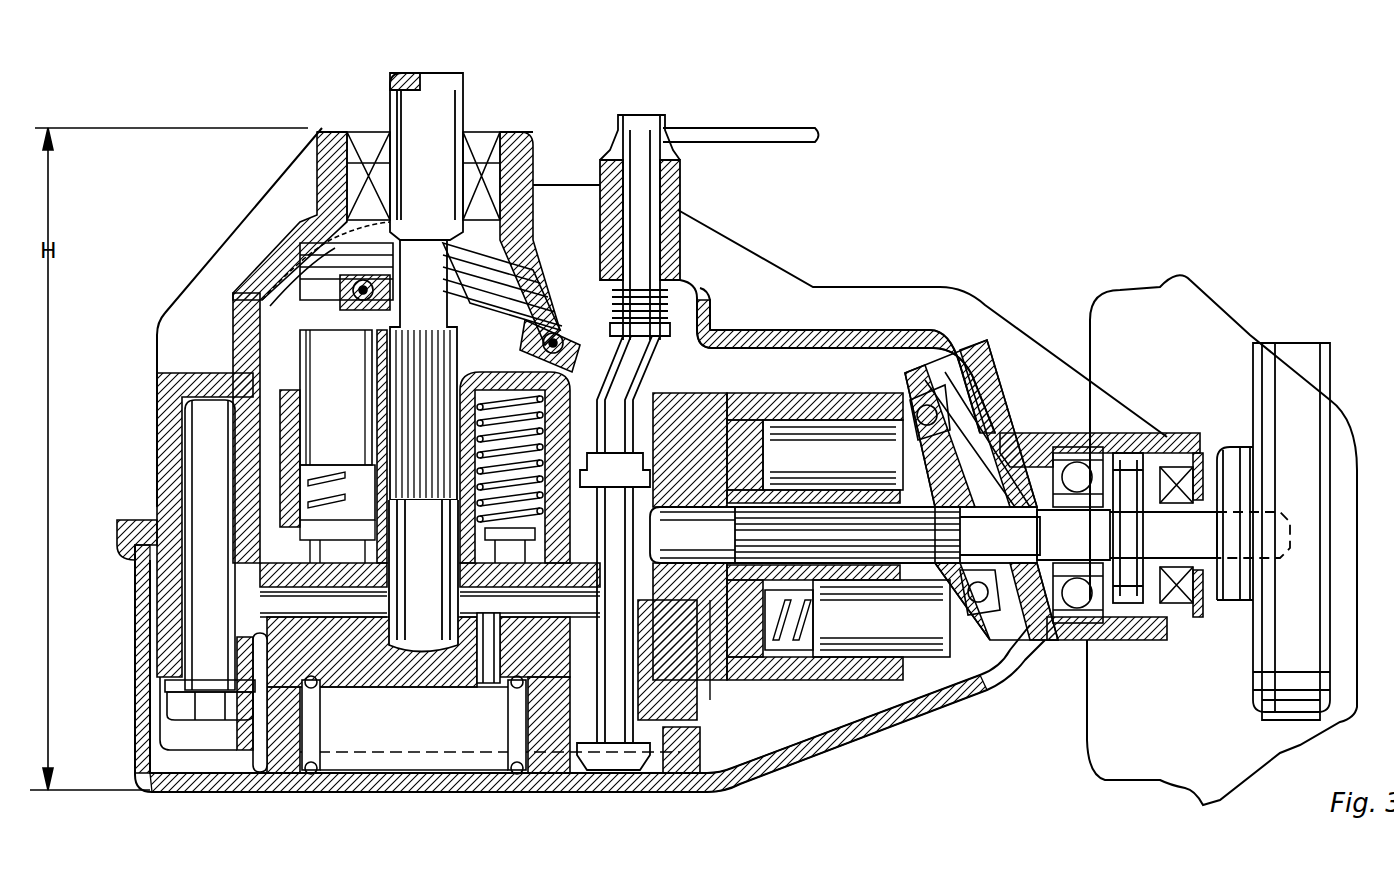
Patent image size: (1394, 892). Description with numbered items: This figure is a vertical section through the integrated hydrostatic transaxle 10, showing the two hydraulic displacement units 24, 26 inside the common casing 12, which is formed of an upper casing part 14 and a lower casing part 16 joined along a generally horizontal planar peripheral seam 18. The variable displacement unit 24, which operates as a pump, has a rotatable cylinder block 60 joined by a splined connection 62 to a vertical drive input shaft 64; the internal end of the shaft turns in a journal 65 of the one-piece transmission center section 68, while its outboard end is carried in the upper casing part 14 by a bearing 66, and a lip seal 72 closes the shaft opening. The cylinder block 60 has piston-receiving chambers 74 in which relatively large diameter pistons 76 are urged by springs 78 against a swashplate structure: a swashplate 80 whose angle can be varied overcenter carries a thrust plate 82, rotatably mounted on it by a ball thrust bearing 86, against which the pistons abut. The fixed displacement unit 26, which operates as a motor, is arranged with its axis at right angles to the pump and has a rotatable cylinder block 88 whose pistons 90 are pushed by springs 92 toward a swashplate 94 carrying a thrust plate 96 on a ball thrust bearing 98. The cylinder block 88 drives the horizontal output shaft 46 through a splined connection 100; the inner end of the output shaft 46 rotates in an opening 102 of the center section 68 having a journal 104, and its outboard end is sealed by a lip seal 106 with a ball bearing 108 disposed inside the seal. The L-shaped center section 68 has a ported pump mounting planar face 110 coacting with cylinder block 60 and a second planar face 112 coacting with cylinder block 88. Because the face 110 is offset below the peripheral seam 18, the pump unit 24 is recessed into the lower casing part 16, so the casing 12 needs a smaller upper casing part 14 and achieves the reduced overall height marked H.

The integrated hydrostatic transaxle 10 is at (190, 247).
The common housing or casing 12 is at (198, 268).
The upper casing part 14 is at (233, 290).
The lower casing part 16 is at (137, 603).
The peripheral seam 18 is at (140, 558).
The hydraulic displacement unit 24 is at (323, 340).
The hydraulic displacement unit 26 is at (797, 330).
The output shaft 46 is at (1185, 640).
The rotatable cylinder block 60 is at (305, 440).
The splined connection 62 is at (397, 412).
The drive input shaft 64 is at (392, 92).
The journal 65 is at (418, 650).
The bearing 66 is at (368, 172).
The one-piece transmission center section 68 is at (250, 746).
The lip seal 72 is at (484, 133).
The piston-receiving chambers 74 is at (320, 490).
The piston 76 is at (460, 400).
The spring 78 is at (320, 512).
The swashplate 80 is at (335, 200).
The thrust plate 82 is at (317, 233).
The ball thrust bearing 86 is at (330, 218).
The rotatable cylinder block 88 is at (860, 655).
The piston 90 is at (915, 600).
The spring 92 is at (787, 635).
The swashplate 94 is at (1023, 620).
The thrust plate 96 is at (967, 640).
The ball thrust bearing 98 is at (1000, 640).
The splined connection 100 is at (830, 663).
The opening 102 is at (733, 620).
The journal 104 is at (715, 700).
The lip seal 106 is at (1185, 467).
The ball bearing 108 is at (1078, 462).
The planar face 110 is at (117, 525).
The second planar face 112 is at (763, 560).